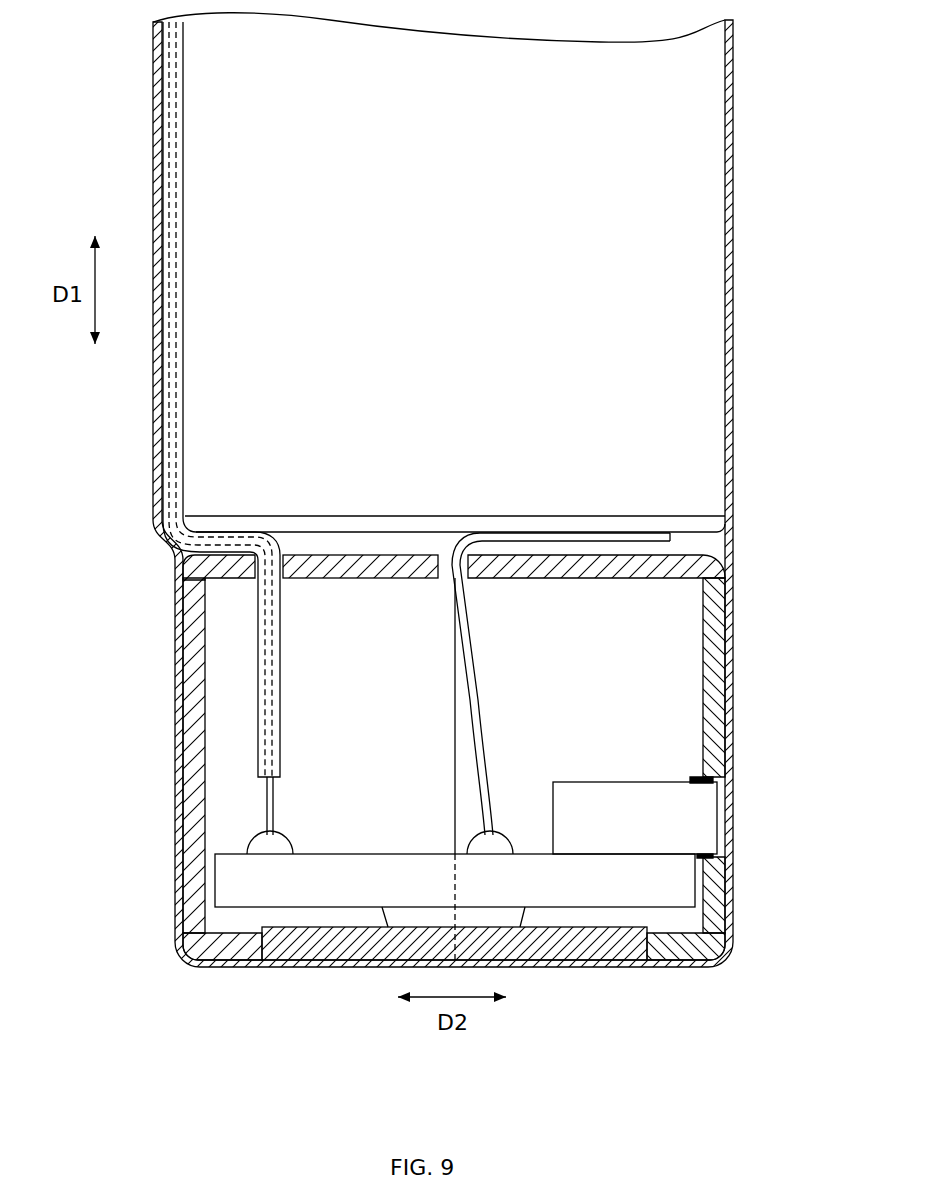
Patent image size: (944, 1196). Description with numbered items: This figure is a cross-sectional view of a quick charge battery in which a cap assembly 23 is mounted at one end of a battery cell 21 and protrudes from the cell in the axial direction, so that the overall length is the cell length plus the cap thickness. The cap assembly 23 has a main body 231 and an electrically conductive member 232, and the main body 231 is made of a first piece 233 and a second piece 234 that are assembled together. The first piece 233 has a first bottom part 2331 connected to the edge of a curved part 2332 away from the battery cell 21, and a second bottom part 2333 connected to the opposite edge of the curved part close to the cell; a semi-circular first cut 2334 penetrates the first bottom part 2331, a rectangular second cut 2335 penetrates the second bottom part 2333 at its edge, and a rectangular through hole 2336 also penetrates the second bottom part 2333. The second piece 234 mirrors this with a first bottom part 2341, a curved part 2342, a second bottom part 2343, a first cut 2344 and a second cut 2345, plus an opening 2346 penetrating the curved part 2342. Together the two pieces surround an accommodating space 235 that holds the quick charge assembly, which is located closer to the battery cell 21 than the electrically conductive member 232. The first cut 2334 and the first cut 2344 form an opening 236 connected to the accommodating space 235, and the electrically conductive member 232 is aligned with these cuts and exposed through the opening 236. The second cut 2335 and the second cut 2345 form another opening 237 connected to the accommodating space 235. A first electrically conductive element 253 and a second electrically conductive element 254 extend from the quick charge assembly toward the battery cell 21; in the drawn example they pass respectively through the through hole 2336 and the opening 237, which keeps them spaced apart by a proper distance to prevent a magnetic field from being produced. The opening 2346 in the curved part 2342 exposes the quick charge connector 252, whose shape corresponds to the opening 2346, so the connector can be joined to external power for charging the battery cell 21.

The battery cell 21 is at (680, 283).
The cap assembly 23 is at (380, 1040).
The main body 231 is at (247, 957).
The electrically conductive member 232 is at (355, 945).
The first piece 233 is at (84, 595).
The first bottom part 2331 is at (233, 963).
The curved part 2332 is at (200, 775).
The second bottom part 2333 is at (340, 570).
The first cut 2334 is at (260, 933).
The second cut 2335 is at (443, 580).
The through hole 2336 is at (255, 580).
The second piece 234 is at (840, 625).
The first bottom part 2341 is at (677, 942).
The curved part 2342 is at (714, 738).
The second bottom part 2343 is at (640, 570).
The first cut 2344 is at (647, 960).
The second cut 2345 is at (463, 575).
The opening 2346 is at (717, 783).
The accommodating space 235 is at (370, 626).
The opening 236 is at (645, 950).
The opening 237 is at (445, 552).
The quick charge connector 252 is at (593, 828).
The first electrically conductive element 253 is at (273, 805).
The second electrically conductive element 254 is at (488, 745).